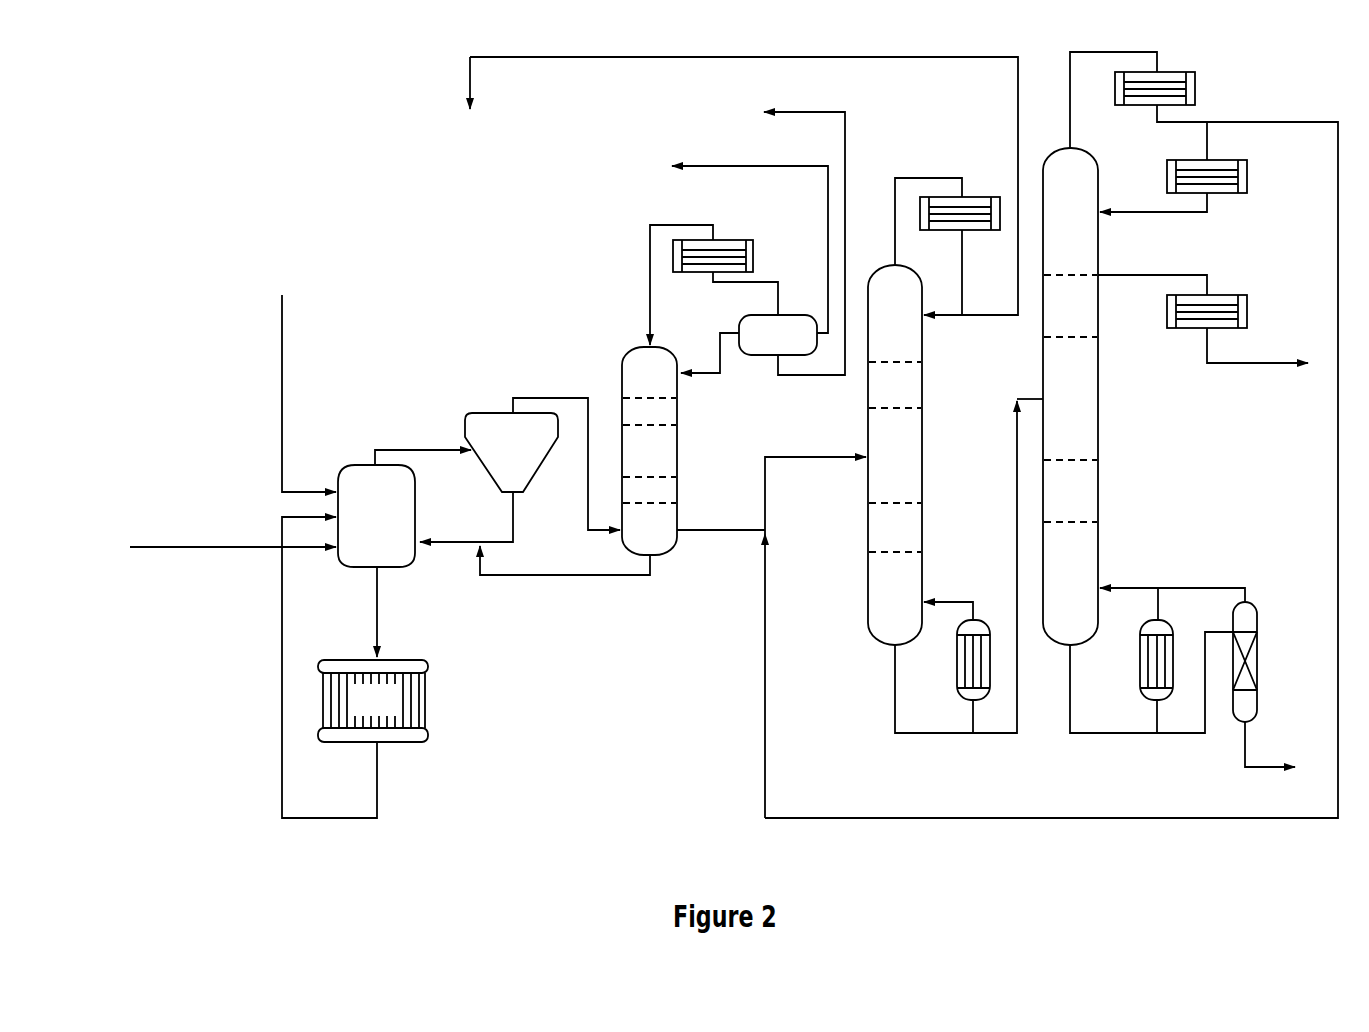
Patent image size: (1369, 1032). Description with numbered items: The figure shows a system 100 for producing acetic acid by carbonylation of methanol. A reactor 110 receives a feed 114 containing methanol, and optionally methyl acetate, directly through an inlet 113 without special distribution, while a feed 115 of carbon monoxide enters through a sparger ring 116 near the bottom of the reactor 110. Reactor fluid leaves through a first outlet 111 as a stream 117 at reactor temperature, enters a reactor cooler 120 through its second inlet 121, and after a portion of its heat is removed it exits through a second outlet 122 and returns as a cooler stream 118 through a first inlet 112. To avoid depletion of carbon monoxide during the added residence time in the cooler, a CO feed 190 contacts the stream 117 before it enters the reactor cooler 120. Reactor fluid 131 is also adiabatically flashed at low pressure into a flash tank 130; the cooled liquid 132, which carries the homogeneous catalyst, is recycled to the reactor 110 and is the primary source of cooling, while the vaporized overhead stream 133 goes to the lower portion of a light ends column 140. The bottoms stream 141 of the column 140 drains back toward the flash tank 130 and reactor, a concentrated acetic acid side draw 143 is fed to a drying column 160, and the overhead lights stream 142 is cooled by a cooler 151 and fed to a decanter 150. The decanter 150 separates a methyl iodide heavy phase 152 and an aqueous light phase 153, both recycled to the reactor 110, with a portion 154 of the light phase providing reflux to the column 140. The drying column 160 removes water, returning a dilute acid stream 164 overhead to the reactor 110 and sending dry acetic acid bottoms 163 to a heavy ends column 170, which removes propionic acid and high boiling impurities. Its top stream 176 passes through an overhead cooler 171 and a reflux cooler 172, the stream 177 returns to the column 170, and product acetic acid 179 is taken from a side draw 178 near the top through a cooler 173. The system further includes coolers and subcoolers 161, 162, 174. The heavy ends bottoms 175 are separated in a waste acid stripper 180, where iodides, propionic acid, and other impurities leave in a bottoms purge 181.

The system 100 is at (278, 70).
The reactor 110 is at (397, 535).
The first outlet 111 is at (388, 573).
The first inlet 112 is at (334, 508).
The inlet 113 is at (334, 489).
The feed 114 is at (279, 354).
The feed 115 is at (181, 552).
The sparger ring 116 is at (334, 545).
The stream of reactor fluid 117 is at (372, 596).
The stream 118 is at (279, 678).
The reactor cooler 120 is at (396, 714).
The second inlet 121 is at (383, 658).
The second outlet 122 is at (383, 742).
The flash tank 130 is at (533, 458).
The reactor fluid 131 is at (434, 457).
The catalyst recycle stream 132 is at (514, 531).
The vaporized product overhead stream 133 is at (549, 397).
The light ends column 140 is at (670, 467).
The bottoms stream 141 is at (564, 578).
The overhead lights stream 142 is at (648, 264).
The side draw 143 is at (722, 533).
The decanter 150 is at (798, 347).
The cooler 151 is at (727, 240).
The heavy phase liquid stream 152 is at (848, 158).
The light phase liquid stream 153 is at (750, 166).
The decanter light phase portion 154 is at (703, 376).
The drying column 160 is at (915, 469).
The cooler 161 is at (955, 659).
The cooler 162 is at (984, 196).
The drying column bottoms 163 is at (893, 689).
The dilute acid stream 164 is at (568, 58).
The heavy ends column 170 is at (1090, 415).
The overhead cooler 171 is at (1175, 71).
The reflux cooler 172 is at (1224, 159).
The cooler 173 is at (1224, 295).
The cooler 174 is at (1140, 660).
The heavy ends column bottoms 175 is at (1068, 692).
The top stream 176 is at (1069, 90).
The stream 177 is at (1142, 211).
The side draw 178 is at (1145, 277).
The product acetic acid 179 is at (1260, 363).
The waste acid stripper 180 is at (1257, 622).
The bottoms purge 181 is at (1240, 744).
The CO feed 190 is at (385, 592).